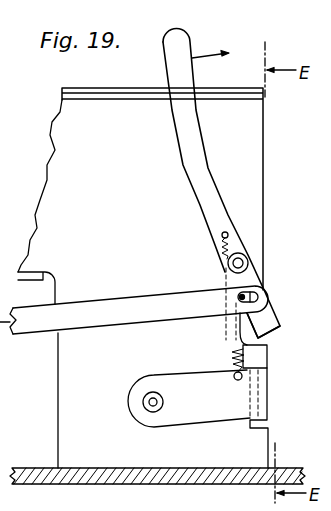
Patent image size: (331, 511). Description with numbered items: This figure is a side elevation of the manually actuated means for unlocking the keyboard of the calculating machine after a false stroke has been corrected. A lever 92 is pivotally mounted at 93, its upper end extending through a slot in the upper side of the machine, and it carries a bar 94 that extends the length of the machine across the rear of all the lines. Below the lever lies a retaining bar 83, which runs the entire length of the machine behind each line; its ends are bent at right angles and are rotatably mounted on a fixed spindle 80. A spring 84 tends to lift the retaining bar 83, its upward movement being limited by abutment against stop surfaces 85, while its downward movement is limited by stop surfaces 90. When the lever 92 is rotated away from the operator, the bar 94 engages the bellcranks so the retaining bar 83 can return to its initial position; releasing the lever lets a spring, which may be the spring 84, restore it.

The lever 92 is at (197, 162).
The pivot 93 is at (250, 262).
The bar 94 is at (265, 320).
The spring 84 is at (268, 348).
The stop surfaces 85 is at (268, 367).
The retaining bar 83 is at (268, 420).
The stop surfaces 90 is at (260, 430).
The fixed spindle 80 is at (147, 408).